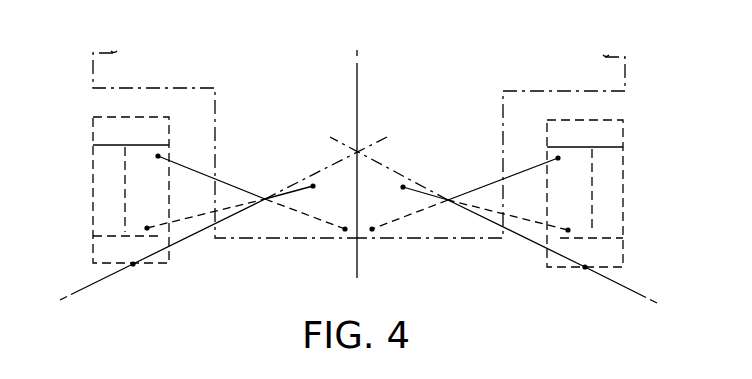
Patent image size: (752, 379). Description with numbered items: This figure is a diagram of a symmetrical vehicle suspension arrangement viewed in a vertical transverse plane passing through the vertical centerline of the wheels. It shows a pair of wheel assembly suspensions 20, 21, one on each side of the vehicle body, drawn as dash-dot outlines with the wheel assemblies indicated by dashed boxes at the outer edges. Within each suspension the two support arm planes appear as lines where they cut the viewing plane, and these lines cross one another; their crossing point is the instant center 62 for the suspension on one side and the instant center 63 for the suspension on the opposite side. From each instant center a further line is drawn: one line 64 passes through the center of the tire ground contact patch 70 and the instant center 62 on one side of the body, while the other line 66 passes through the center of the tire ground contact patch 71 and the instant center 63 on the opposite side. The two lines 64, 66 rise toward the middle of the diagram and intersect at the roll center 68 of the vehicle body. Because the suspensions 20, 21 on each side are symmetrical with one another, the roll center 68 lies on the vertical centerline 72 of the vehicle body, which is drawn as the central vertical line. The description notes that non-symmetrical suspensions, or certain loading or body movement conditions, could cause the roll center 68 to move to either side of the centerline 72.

The wheel assembly suspension 20 is at (258, 90).
The wheel assembly suspension 21 is at (468, 98).
The instant center 62 is at (265, 201).
The instant center 63 is at (448, 202).
The line 64 is at (190, 237).
The line 66 is at (527, 238).
The roll center 68 is at (359, 149).
The tire ground contact patch 70 is at (133, 266).
The tire ground contact patch 71 is at (585, 269).
The vertical centerline 72 is at (357, 82).